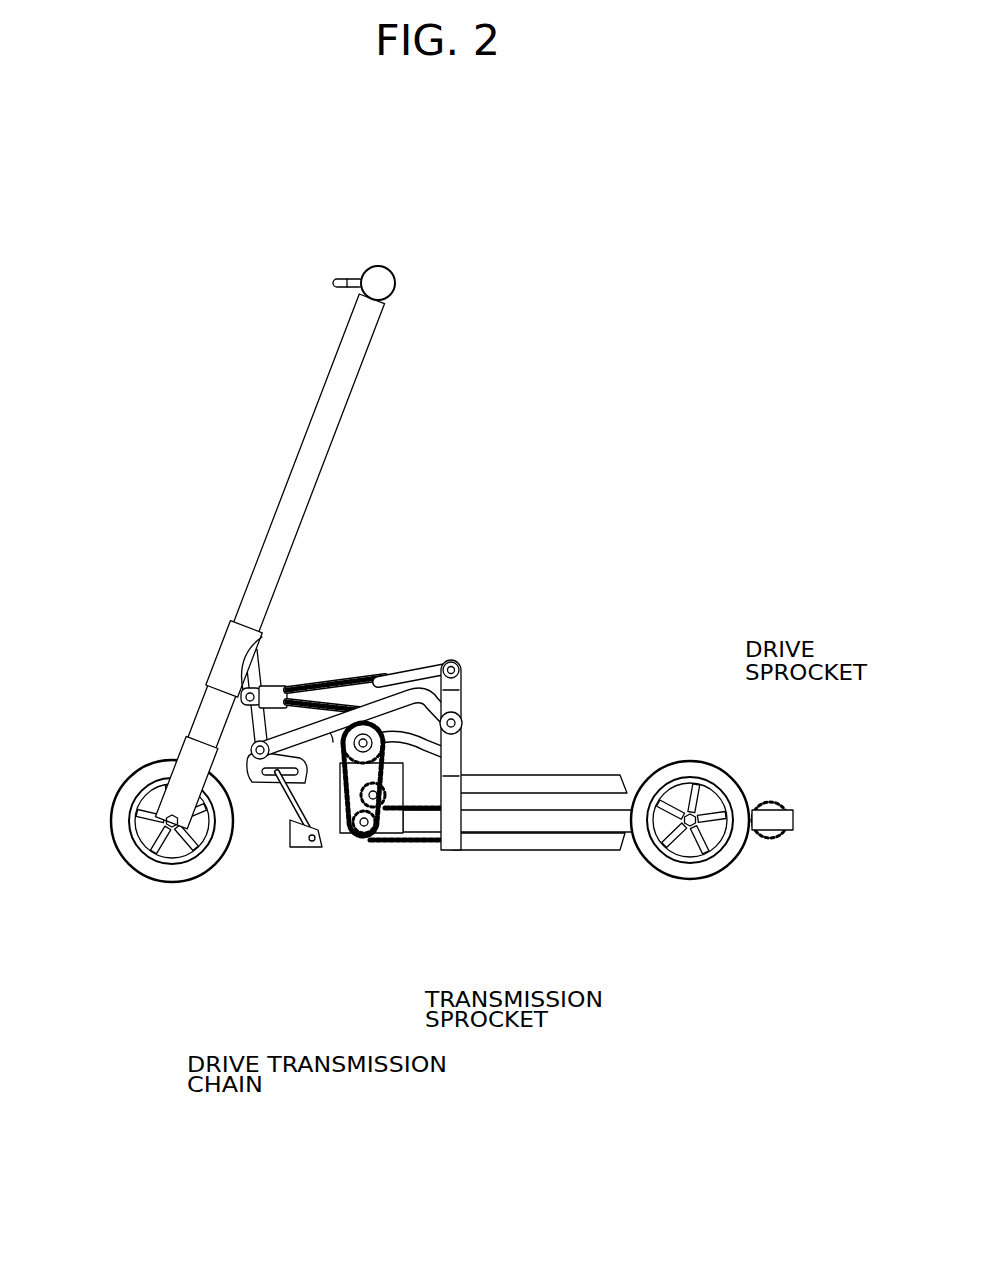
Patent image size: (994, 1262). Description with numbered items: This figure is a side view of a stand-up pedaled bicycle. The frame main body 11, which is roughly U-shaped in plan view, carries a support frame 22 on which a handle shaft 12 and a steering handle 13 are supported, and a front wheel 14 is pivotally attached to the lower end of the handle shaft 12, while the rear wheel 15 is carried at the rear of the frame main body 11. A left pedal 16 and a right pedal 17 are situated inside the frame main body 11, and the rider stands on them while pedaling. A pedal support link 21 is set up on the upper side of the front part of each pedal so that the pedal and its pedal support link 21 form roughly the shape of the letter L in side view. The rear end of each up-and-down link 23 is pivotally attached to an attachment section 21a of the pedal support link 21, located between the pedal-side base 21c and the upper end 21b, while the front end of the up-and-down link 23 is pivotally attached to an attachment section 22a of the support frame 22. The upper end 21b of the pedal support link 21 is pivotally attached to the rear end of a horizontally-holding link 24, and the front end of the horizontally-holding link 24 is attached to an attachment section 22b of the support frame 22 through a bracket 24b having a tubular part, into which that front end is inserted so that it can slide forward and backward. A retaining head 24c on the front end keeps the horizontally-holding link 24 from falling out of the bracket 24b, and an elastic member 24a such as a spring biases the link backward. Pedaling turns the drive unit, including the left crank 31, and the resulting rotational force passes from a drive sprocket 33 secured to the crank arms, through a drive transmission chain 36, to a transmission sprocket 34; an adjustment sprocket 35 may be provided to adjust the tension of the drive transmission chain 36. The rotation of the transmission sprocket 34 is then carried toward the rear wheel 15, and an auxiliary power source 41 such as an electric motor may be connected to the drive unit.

The frame main body 11 is at (578, 820).
The handle shaft 12 is at (353, 397).
The steering handle 13 is at (375, 263).
The front wheel 14 is at (143, 863).
The rear wheel 15 is at (703, 866).
The left pedal 16 is at (578, 782).
The right pedal 17 is at (502, 840).
The pedal support link 21 is at (462, 690).
The attachment section 21a is at (463, 717).
The upper end 21b is at (462, 662).
The pedal-side base 21c is at (470, 775).
The support frame 22 is at (240, 729).
The attachment section 22a is at (262, 782).
The attachment section 22b is at (236, 693).
The up-and-down link 23 is at (453, 660).
The horizontally-holding link 24 is at (407, 672).
The elastic member 24a is at (322, 684).
The bracket 24b is at (268, 686).
The retaining head 24c is at (243, 690).
The left crank 31 is at (395, 672).
The drive sprocket 33 is at (385, 742).
The transmission sprocket 34 is at (362, 845).
The adjustment sprocket 35 is at (378, 810).
The drive transmission chain 36 is at (356, 845).
The auxiliary power source 41 is at (357, 678).